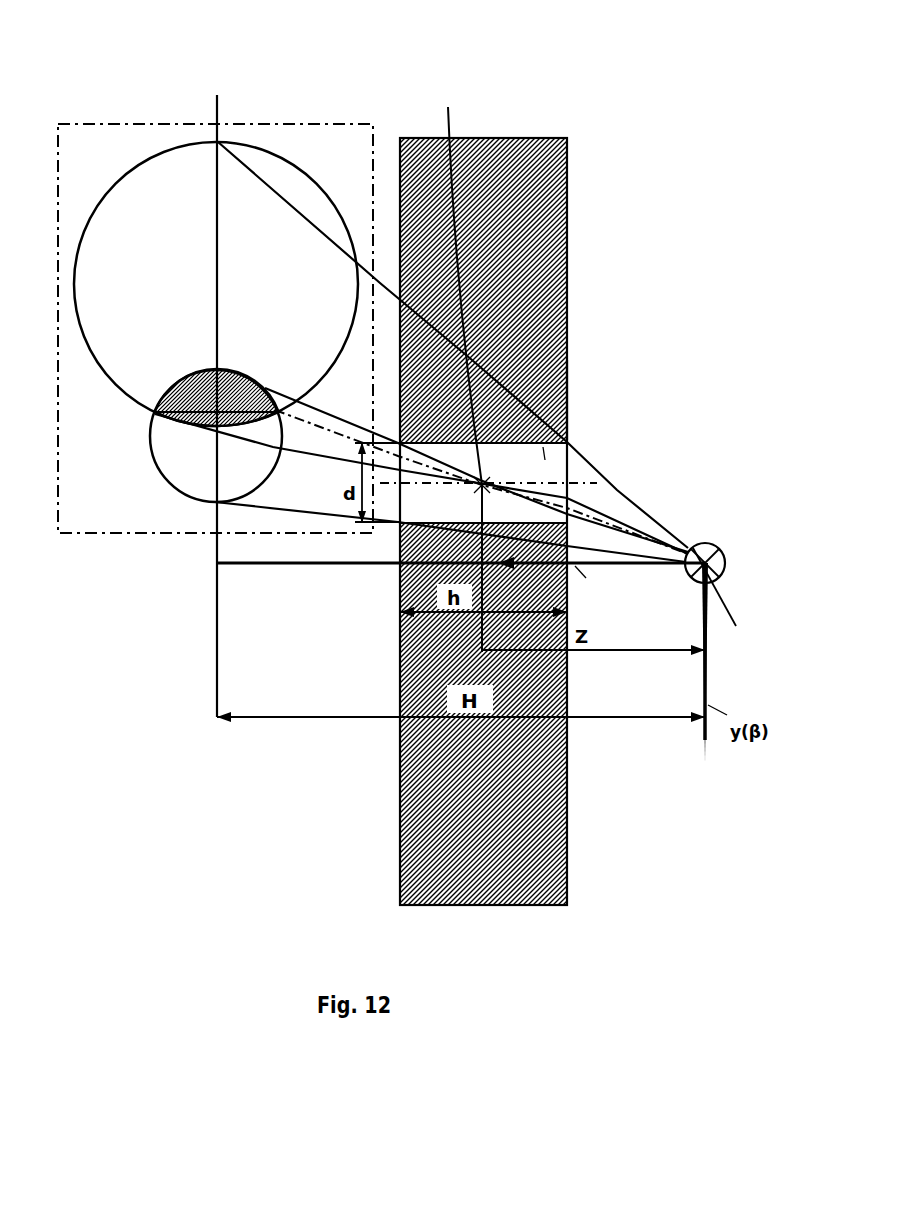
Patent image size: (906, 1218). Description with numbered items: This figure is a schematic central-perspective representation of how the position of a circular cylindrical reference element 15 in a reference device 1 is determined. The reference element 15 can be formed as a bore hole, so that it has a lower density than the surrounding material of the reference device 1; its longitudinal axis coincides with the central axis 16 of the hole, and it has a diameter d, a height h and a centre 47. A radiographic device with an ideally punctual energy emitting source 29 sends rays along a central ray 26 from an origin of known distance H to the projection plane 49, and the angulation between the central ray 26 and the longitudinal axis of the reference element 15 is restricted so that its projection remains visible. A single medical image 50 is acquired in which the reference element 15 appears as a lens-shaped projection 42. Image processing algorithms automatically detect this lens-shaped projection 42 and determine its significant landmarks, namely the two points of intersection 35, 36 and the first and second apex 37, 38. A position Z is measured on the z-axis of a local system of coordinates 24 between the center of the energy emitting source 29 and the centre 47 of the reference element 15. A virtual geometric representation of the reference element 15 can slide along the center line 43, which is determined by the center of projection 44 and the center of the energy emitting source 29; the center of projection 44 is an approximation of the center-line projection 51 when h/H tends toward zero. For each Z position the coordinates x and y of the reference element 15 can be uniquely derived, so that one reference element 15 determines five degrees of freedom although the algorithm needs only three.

The reference device 1 is at (528, 138).
The circular cylindrical reference element 15 is at (566, 400).
The central axis 16 is at (590, 478).
The local system of coordinates 24 is at (732, 600).
The central ray 26 is at (255, 565).
The energy emitting source 29 is at (710, 545).
The point of intersection 35 is at (155, 412).
The point of intersection 36 is at (247, 367).
The first apex 37 is at (215, 420).
The second apex 38 is at (213, 372).
The lens-shaped projection 42 is at (182, 383).
The center line 43 is at (333, 428).
The center of projection 44 is at (212, 420).
The centre 47 is at (464, 367).
The projection plane 49 is at (219, 108).
The medical image 50 is at (106, 130).
The center-line projection 51 is at (262, 440).